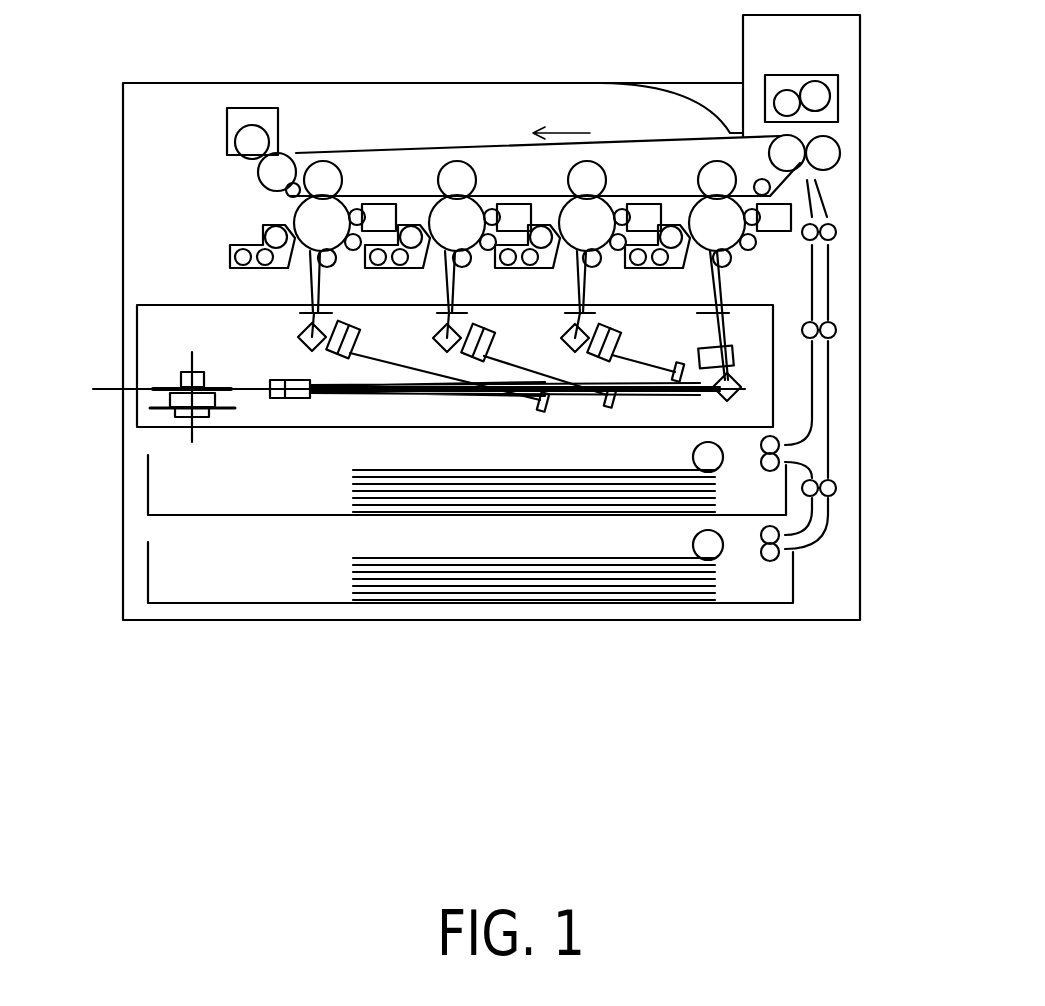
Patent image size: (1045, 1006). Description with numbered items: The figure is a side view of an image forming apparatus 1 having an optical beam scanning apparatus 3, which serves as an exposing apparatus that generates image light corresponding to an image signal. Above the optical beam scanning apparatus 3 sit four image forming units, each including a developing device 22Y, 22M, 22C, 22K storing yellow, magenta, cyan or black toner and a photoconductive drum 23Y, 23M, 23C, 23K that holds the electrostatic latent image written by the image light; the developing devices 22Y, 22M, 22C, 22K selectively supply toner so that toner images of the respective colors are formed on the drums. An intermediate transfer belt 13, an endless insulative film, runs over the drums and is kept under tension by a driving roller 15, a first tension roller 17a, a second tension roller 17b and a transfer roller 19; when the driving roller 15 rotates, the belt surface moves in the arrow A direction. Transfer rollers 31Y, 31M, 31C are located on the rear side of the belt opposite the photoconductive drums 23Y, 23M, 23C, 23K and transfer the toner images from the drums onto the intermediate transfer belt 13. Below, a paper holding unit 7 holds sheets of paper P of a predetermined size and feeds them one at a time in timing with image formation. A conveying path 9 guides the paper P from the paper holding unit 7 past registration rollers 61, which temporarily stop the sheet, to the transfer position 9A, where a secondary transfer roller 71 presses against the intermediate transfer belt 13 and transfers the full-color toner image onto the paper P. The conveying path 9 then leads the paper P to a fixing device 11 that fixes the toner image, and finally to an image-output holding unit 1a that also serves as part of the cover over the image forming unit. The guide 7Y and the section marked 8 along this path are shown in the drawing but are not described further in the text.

The image forming apparatus 1 is at (123, 140).
The image-output holding unit 1a is at (635, 93).
The intermediate transfer belt 13 is at (425, 146).
The driving roller 15 is at (258, 172).
The first tension roller 17a is at (301, 157).
The second tension roller 17b is at (755, 178).
The transfer roller 31Y is at (330, 160).
The transfer roller 31M is at (463, 160).
The transfer roller 31C is at (595, 160).
The developing device 22Y is at (230, 262).
The developing device 22M is at (407, 226).
The developing device 22C is at (540, 222).
The developing device 22K is at (667, 220).
The photoconductive drum 23Y is at (345, 231).
The photoconductive drum 23M is at (480, 231).
The photoconductive drum 23C is at (610, 231).
The photoconductive drum 23K is at (740, 231).
The sheet discharge section 8 is at (802, 72).
The fixing device 11 is at (838, 80).
The transfer roller 19 is at (809, 130).
The transfer position 9A is at (813, 150).
The secondary transfer roller 71 is at (836, 168).
The sheet guide 7Y is at (812, 210).
The registration rollers 61 is at (834, 234).
The conveying path 9 is at (830, 390).
The optical beam scanning apparatus 3 is at (155, 335).
The paper holding unit 7 is at (160, 487).
The paper P is at (353, 487).